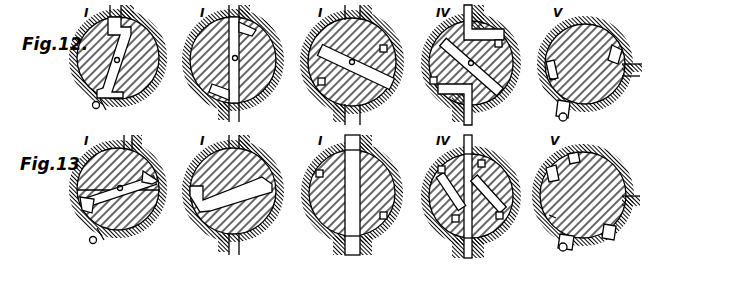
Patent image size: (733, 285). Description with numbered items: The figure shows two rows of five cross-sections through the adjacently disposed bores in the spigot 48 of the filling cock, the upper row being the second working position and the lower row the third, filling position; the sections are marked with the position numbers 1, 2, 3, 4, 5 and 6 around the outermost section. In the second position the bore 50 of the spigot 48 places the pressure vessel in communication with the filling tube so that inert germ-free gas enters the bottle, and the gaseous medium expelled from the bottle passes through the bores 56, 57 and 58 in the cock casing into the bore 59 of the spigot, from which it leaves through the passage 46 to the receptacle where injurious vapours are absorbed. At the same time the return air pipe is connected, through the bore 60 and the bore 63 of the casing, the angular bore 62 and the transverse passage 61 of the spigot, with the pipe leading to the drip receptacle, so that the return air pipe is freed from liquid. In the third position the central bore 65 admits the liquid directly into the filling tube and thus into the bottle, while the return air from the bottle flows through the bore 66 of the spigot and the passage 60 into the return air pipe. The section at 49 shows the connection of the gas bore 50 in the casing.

In FIG. 12, the port 1 is at (549, 80).
In FIG. 13, the port 1 is at (549, 172).
In FIG. 12, the port 2 is at (549, 60).
In FIG. 13, the port 2 is at (578, 149).
In FIG. 12, the port 3 is at (585, 54).
In FIG. 13, the port 3 is at (610, 185).
In FIG. 12, the port 4 is at (620, 53).
In FIG. 13, the port 4 is at (606, 232).
In FIG. 12, the port 5 is at (595, 104).
In FIG. 13, the port 5 is at (578, 238).
In FIG. 12, the port 6 is at (580, 108).
In FIG. 13, the port 6 is at (551, 218).
In FIG. 12, the passage 46 is at (137, 14).
In FIG. 13, the passage 46 is at (136, 148).
In FIG. 12, the spigot 48 is at (148, 50).
In FIG. 13, the spigot 48 is at (145, 222).
In FIG. 12, the pipe connection 49 is at (232, 112).
In FIG. 13, the pipe connection 49 is at (240, 246).
In FIG. 12, the bore 50 is at (233, 60).
In FIG. 13, the bore 50 is at (233, 191).
In FIG. 12, the bore 56 is at (362, 14).
In FIG. 13, the bore 56 is at (362, 248).
In FIG. 12, the bore 57 is at (92, 106).
In FIG. 13, the bore 57 is at (95, 245).
In FIG. 12, the bore 58 is at (110, 103).
In FIG. 13, the bore 58 is at (105, 238).
In FIG. 12, the bore 59 is at (118, 58).
In FIG. 13, the bore 59 is at (118, 189).
In FIG. 12, the bore 60 is at (478, 122).
In FIG. 13, the bore 60 is at (476, 252).
In FIG. 12, the transverse passage 61 is at (431, 80).
In FIG. 13, the transverse passage 61 is at (436, 172).
In FIG. 12, the angular bore 62 is at (488, 30).
In FIG. 13, the angular bore 62 is at (433, 202).
In FIG. 12, the bore 63 is at (630, 66).
In FIG. 13, the bore 63 is at (615, 222).
In FIG. 12, the central bore 65 is at (352, 62).
In FIG. 13, the central bore 65 is at (352, 195).
In FIG. 12, the bore 66 is at (471, 65).
In FIG. 13, the bore 66 is at (471, 196).